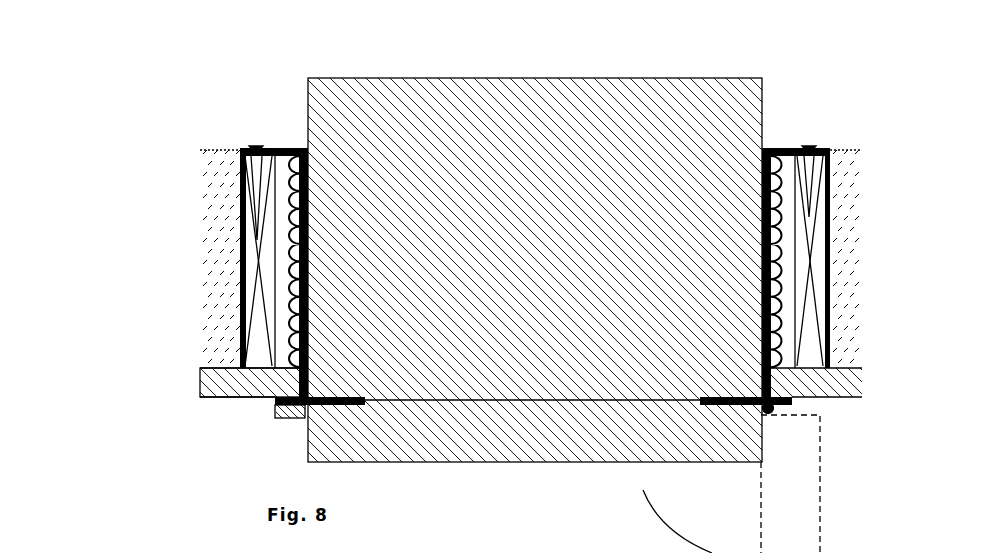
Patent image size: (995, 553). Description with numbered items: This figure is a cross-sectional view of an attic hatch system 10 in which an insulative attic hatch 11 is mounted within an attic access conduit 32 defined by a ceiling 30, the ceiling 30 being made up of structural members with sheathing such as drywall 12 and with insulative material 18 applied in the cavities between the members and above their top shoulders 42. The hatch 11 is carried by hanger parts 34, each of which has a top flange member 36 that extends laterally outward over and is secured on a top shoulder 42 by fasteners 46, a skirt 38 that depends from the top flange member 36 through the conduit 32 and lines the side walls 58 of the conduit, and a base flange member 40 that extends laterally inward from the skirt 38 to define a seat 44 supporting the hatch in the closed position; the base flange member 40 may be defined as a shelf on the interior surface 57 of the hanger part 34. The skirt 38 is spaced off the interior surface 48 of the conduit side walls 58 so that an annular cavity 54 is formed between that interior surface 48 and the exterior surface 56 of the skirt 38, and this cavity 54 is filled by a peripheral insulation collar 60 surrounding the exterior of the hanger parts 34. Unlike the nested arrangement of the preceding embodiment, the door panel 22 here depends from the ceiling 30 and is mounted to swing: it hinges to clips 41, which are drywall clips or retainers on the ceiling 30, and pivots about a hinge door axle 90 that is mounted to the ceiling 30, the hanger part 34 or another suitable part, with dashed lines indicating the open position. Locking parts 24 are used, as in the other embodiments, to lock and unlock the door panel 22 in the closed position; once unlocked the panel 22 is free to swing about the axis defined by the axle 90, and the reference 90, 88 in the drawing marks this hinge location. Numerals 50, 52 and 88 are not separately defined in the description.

The attic hatch system 10 is at (101, 99).
The insulative attic hatch 11 is at (402, 57).
The drywall 12 is at (196, 384).
The insulative material 18 is at (212, 151).
The door panel 22 is at (543, 455).
The locking part 24 is at (303, 400).
The ceiling 30 is at (212, 397).
The attic access conduit 32 is at (800, 540).
The hanger part 34 is at (286, 148).
The top flange member 36 is at (275, 148).
The skirt 38 is at (762, 250).
The base flange member 40 is at (284, 291).
The drywall clip 41 is at (303, 407).
The top shoulder 42 is at (242, 177).
The seat 44 is at (348, 396).
The fastener 46 is at (254, 149).
The interior surface 48 is at (284, 241).
The channel outer wall 50 is at (297, 148).
The weld joint 52 is at (362, 396).
The annular cavity 54 is at (270, 372).
The exterior surface of the skirt 56 is at (285, 196).
The interior surface of the hanger part 57 is at (308, 178).
The side wall of the attic access conduit 58 is at (328, 396).
The peripheral insulation collar 60 is at (782, 172).
The sensor region 88 is at (769, 415).
The hinge door axle 90 is at (826, 478).